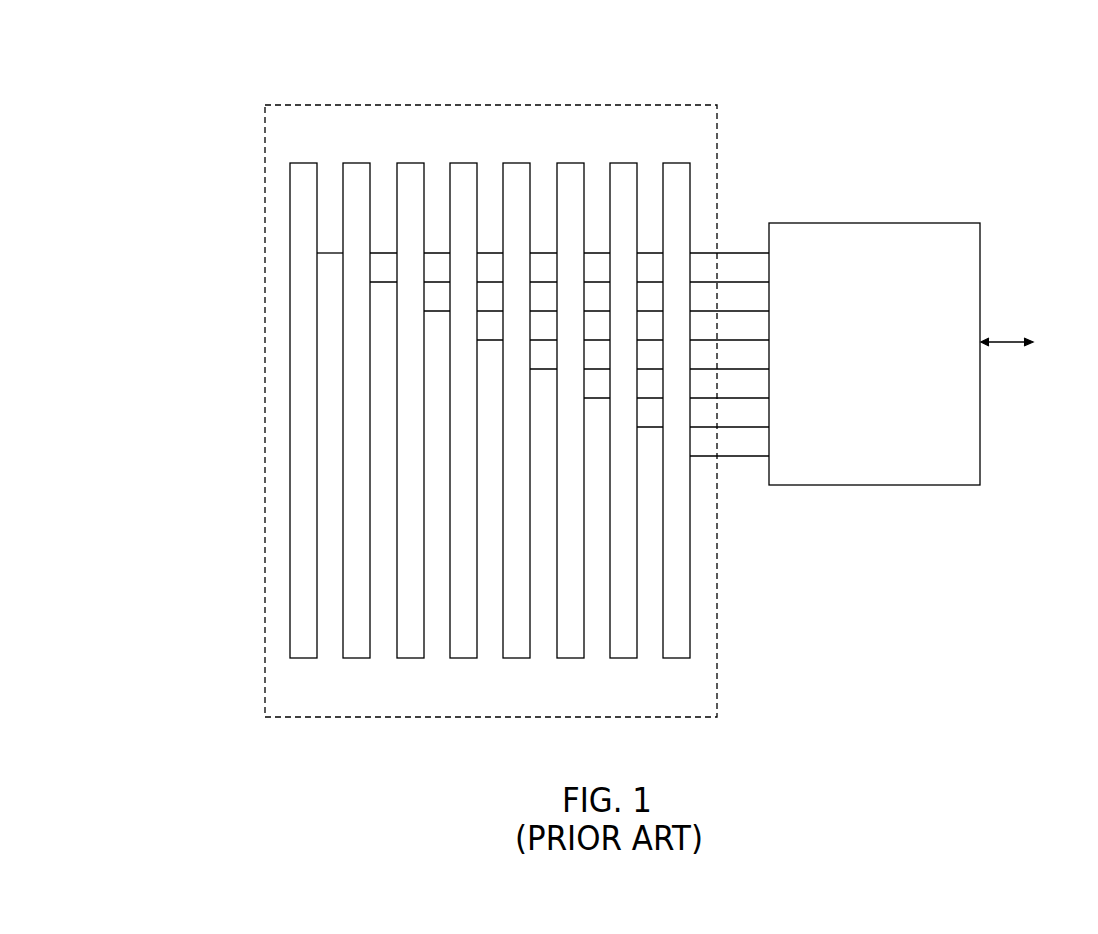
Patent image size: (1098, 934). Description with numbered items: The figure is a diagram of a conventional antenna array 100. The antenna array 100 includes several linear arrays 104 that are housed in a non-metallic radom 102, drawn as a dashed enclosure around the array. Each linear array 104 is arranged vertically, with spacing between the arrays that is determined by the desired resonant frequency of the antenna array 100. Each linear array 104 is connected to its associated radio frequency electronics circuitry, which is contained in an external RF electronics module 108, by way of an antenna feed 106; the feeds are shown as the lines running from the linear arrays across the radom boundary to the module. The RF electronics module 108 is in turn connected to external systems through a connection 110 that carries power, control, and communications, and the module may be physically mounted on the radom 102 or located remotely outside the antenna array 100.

The antenna array 100 is at (185, 47).
The radom 102 is at (262, 122).
The linear array 104 is at (300, 262).
The antenna feed 106 is at (728, 250).
The RF electronics module 108 is at (918, 228).
The connection 110 is at (1034, 345).